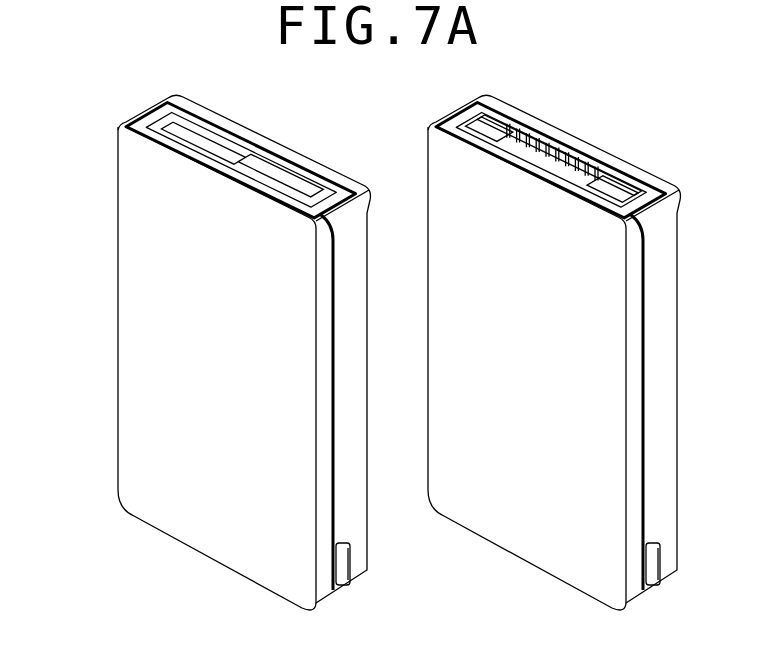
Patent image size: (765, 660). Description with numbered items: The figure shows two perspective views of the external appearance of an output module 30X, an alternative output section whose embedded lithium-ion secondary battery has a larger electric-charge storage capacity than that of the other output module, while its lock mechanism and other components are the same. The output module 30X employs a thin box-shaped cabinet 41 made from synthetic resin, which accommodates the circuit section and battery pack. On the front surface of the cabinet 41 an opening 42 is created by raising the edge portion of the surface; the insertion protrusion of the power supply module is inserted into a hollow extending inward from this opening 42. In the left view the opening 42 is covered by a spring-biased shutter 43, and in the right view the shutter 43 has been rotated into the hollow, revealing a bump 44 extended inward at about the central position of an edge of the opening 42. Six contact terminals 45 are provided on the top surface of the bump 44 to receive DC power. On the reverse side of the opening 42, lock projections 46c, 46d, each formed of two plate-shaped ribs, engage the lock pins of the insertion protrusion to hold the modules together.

The output module 30X is at (371, 339).
The cabinet 41 is at (130, 393).
The opening 42 is at (477, 125).
The shutter 43 is at (183, 125).
The bump 44 is at (217, 143).
The contact terminals 45 is at (580, 155).
The lock projection 46c is at (507, 121).
The lock projection 46d is at (623, 175).